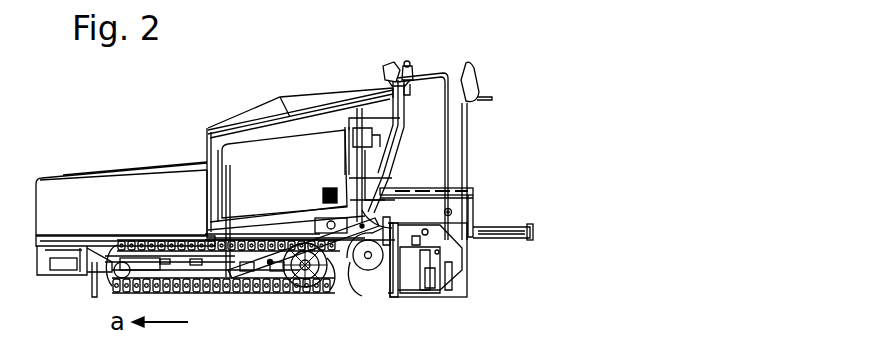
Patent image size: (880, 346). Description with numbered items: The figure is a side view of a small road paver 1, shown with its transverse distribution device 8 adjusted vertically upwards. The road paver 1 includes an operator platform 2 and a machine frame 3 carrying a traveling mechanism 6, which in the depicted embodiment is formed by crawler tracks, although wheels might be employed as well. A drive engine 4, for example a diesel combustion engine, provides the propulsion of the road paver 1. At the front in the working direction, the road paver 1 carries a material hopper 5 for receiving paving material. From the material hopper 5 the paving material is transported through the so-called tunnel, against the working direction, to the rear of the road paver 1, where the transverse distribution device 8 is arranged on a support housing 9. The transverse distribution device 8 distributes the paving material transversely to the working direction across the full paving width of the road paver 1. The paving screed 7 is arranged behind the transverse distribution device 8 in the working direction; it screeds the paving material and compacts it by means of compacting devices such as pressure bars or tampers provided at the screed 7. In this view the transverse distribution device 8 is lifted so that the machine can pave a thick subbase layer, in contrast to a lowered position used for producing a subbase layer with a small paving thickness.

The road paver 1 is at (514, 129).
The operator platform 2 is at (428, 97).
The machine frame 3 is at (263, 160).
The drive engine 4 is at (325, 157).
The material hopper 5 is at (123, 203).
The traveling mechanism 6 is at (232, 278).
The paving screed 7 is at (407, 272).
The transverse distribution device 8 is at (372, 265).
The support housing 9 is at (365, 235).